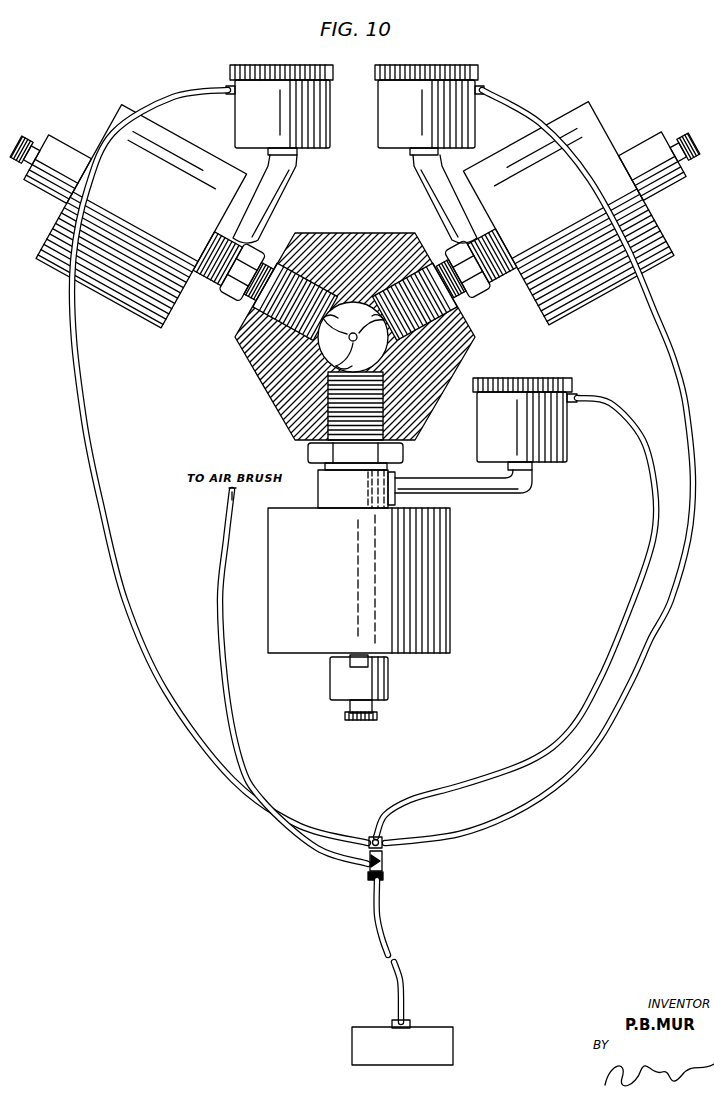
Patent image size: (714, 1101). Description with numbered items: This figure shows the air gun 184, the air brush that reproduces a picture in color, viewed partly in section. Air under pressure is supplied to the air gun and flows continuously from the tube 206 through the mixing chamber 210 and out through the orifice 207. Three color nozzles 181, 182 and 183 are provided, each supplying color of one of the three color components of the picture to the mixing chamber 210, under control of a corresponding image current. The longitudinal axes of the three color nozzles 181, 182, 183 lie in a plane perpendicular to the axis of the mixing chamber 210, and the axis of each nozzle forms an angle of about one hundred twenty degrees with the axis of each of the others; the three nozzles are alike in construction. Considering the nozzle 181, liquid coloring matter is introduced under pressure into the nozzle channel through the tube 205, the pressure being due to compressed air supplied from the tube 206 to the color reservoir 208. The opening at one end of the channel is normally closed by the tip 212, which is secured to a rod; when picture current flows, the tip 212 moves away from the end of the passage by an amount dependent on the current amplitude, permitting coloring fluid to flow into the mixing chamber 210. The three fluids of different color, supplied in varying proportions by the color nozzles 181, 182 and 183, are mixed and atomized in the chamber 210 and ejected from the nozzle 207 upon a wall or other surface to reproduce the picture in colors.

The color nozzle 181 is at (452, 588).
The color nozzle 182 is at (123, 308).
The color nozzle 183 is at (563, 312).
The air gun 184 is at (463, 347).
The tube 205 is at (447, 474).
The tube 206 is at (383, 893).
The orifice 207 is at (355, 331).
The color reservoir 208 is at (568, 452).
The mixing chamber 210 is at (381, 356).
The tip 212 is at (362, 334).